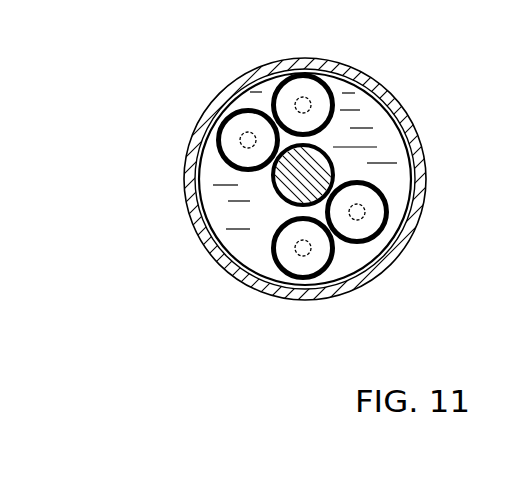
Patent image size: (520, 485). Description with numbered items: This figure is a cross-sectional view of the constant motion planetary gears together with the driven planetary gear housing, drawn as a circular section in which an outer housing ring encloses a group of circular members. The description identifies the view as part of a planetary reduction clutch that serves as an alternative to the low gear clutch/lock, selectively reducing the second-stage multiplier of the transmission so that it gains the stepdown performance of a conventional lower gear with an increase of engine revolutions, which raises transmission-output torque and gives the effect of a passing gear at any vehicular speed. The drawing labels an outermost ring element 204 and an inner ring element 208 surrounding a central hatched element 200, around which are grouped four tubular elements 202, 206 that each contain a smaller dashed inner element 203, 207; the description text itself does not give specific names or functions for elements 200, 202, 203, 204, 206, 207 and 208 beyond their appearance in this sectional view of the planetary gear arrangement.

The central strength member 200 is at (297, 184).
The buffer tube 202 is at (225, 141).
The optical fiber 203 is at (243, 139).
The outer jacket 204 is at (247, 73).
The buffer tube 206 is at (322, 100).
The optical fiber 207 is at (303, 102).
The inner jacket 208 is at (305, 142).